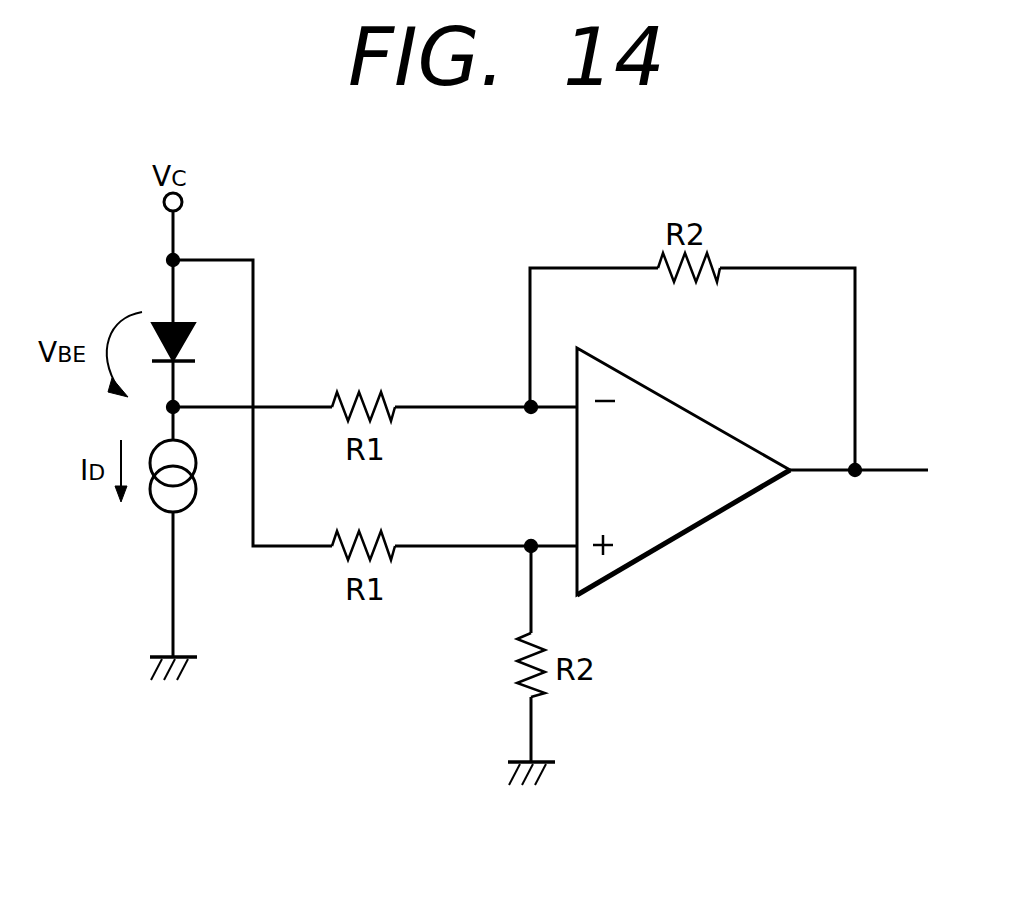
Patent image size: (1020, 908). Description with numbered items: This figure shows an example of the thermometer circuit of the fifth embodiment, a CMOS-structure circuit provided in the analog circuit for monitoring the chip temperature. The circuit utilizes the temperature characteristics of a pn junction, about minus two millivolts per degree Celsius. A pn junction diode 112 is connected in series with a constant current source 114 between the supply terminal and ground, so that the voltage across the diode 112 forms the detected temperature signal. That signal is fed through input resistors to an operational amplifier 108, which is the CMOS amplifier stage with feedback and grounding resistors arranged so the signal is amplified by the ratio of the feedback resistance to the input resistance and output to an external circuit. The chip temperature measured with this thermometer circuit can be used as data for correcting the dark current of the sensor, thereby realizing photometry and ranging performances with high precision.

The pn junction diode 112 is at (188, 343).
The constant current source 114 is at (197, 495).
The operational amplifier 108 is at (693, 518).